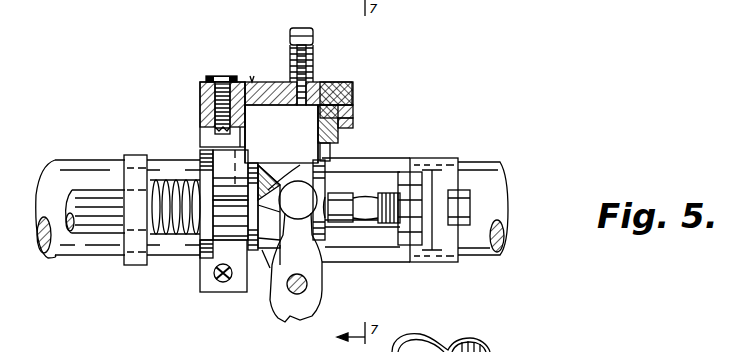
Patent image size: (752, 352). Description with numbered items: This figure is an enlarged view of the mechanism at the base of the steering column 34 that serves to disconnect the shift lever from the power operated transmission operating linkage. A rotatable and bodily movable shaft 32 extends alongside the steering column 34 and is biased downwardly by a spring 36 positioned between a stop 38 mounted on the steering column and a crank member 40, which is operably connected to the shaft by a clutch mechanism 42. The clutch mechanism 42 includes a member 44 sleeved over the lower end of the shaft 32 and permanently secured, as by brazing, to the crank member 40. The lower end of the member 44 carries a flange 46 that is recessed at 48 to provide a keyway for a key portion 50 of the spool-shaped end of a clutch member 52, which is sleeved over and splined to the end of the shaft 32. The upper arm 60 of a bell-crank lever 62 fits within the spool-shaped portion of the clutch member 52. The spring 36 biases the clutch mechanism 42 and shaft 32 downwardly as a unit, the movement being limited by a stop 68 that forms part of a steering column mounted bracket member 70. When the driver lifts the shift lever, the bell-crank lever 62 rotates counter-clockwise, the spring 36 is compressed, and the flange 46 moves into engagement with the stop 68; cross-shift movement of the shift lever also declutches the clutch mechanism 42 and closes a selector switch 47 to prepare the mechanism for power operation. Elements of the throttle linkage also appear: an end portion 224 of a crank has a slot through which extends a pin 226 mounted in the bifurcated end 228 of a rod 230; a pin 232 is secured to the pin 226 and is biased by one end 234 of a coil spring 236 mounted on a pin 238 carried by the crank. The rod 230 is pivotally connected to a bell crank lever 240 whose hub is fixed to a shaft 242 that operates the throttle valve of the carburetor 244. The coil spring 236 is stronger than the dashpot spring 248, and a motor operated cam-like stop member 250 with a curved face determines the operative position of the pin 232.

The shaft 32 is at (80, 192).
The steering column 34 is at (492, 165).
The spring 36 is at (170, 258).
The stop 38 is at (128, 165).
The crank member 40 is at (204, 158).
The clutch mechanism 42 is at (266, 262).
The member 44 is at (200, 268).
The flange 46 is at (246, 160).
The selector switch 47 is at (401, 175).
The recess 48 is at (278, 175).
The key portion 50 is at (287, 178).
The clutch member 52 is at (265, 272).
The upper arm 60 is at (320, 268).
The bell-crank lever 62 is at (326, 296).
The stop 68 is at (245, 140).
The bracket member 70 is at (200, 112).
The end portion 224 is at (362, 175).
The pin 226 is at (420, 170).
The bifurcated end 228 is at (200, 92).
The rod 230 is at (207, 80).
The pin 232 is at (252, 82).
The end of coil spring 234 is at (287, 58).
The coil spring 236 is at (288, 32).
The pin 238 is at (310, 82).
The bell crank lever 240 is at (345, 94).
The shaft 242 is at (336, 84).
The carburetor 244 is at (318, 120).
The dashpot spring 248 is at (346, 112).
The cam-like stop member 250 is at (342, 130).